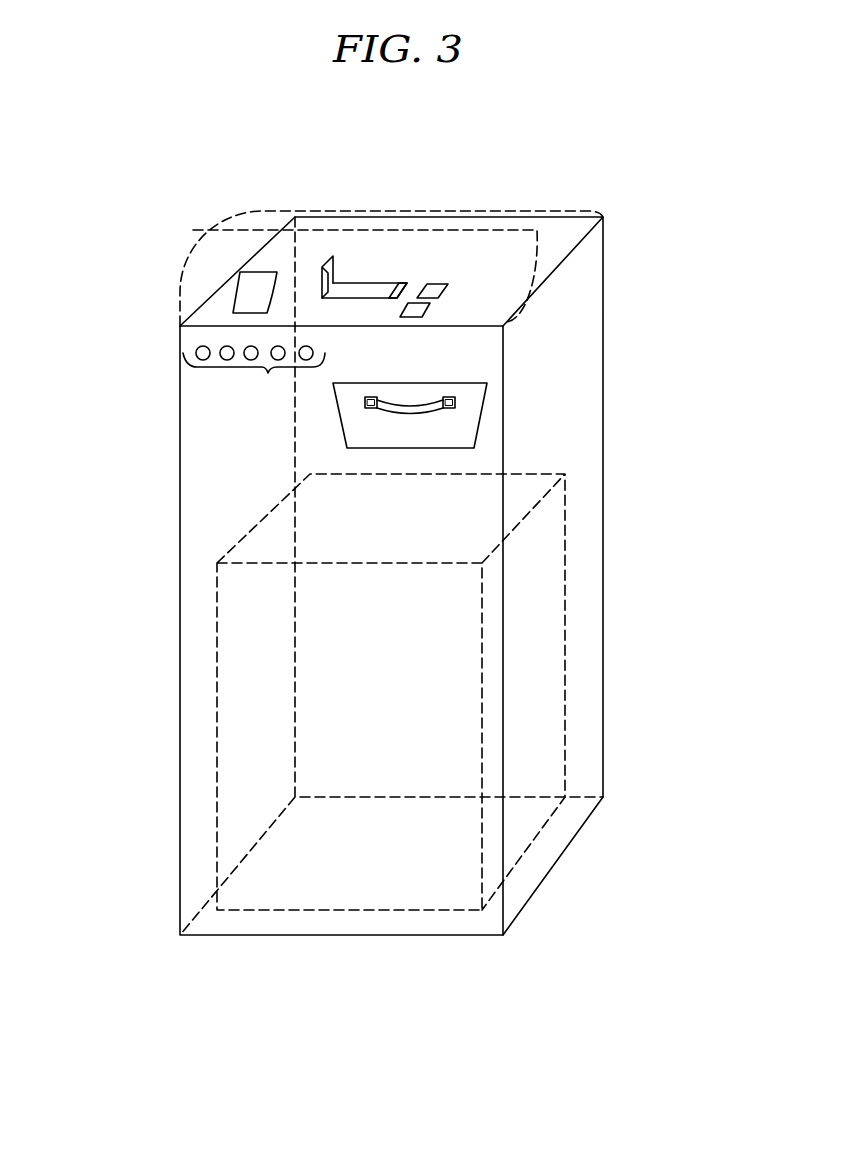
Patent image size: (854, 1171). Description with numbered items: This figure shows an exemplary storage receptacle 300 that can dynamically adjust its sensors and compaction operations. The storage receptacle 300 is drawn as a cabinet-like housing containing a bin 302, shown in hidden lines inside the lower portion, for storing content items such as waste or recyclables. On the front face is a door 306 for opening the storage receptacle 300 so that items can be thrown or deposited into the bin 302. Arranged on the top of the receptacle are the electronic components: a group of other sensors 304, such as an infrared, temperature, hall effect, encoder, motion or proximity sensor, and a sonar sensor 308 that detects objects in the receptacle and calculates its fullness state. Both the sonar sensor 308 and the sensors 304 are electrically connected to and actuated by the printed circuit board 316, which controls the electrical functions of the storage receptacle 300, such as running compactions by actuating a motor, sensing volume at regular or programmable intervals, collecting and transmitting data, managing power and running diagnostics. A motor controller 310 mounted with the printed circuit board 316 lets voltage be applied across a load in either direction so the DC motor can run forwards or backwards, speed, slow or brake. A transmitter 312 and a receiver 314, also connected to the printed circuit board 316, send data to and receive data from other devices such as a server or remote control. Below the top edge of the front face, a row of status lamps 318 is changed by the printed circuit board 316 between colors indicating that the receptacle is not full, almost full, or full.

The storage receptacle 300 is at (180, 625).
The bin 302 is at (535, 690).
The sensors 304 is at (243, 290).
The door 306 is at (407, 383).
The sonar sensor 308 is at (427, 310).
The motor controller 310 is at (332, 262).
The transmitter 312 is at (447, 290).
The receiver 314 is at (400, 285).
The printed circuit board 316 is at (362, 288).
The status lamps 318 is at (268, 373).